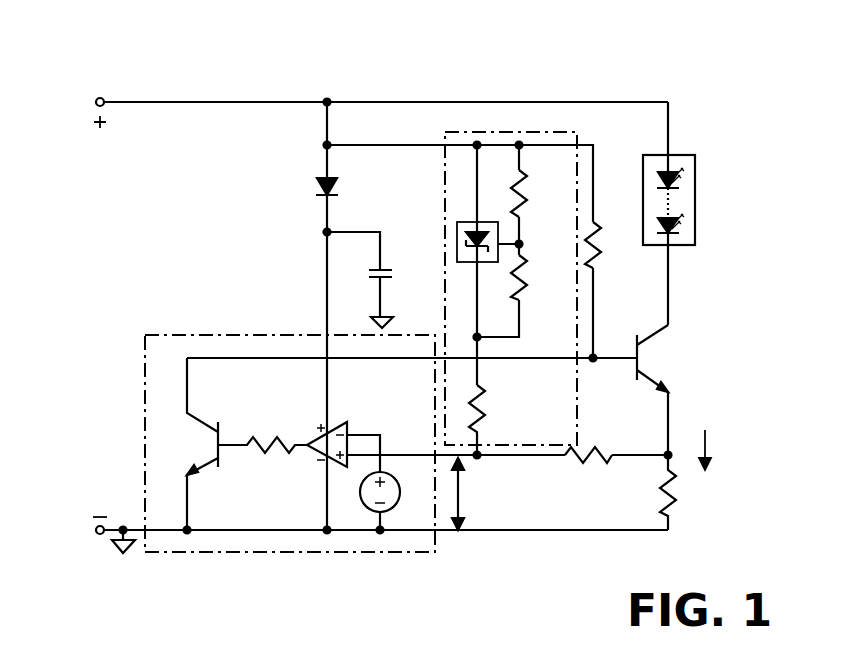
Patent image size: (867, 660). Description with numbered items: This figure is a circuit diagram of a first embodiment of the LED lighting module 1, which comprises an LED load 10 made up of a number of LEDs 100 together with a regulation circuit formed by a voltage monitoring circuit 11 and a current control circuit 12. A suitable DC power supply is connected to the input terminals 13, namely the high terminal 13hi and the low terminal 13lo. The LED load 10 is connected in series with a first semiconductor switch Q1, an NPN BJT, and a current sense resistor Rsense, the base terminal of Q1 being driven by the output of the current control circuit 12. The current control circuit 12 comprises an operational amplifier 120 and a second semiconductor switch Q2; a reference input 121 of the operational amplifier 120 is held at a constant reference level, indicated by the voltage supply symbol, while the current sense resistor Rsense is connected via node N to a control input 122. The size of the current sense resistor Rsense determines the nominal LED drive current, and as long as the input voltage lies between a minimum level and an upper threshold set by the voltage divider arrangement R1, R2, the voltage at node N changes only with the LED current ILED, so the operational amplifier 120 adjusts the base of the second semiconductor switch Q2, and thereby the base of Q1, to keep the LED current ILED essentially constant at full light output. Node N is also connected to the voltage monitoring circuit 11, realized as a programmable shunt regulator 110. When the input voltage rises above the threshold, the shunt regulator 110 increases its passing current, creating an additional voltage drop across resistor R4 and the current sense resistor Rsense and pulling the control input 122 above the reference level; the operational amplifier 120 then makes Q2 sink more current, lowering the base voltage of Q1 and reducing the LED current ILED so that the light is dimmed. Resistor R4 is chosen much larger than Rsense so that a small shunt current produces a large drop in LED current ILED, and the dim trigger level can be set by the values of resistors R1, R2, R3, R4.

The LED lighting module 1 is at (409, 324).
The LED load 10 is at (716, 213).
The LEDs 100 is at (679, 216).
The voltage monitoring circuit 11 is at (487, 254).
The programmable shunt regulator 110 is at (457, 242).
The current control circuit 12 is at (290, 481).
The operational amplifier 120 is at (308, 452).
The reference input 121 is at (373, 434).
The control input 122 is at (371, 456).
The input terminals 13 is at (87, 284).
The high input terminal 13hi is at (100, 97).
The low input terminal 13lo is at (95, 530).
The first semiconductor switch Q1 is at (651, 372).
The second semiconductor switch Q2 is at (200, 419).
The resistor R1 is at (521, 190).
The resistor R2 is at (521, 272).
The resistor R3 is at (480, 410).
The resistor R4 is at (592, 466).
The current sense resistor Rsense is at (672, 518).
The node N is at (479, 461).
The LED current ILED is at (728, 452).